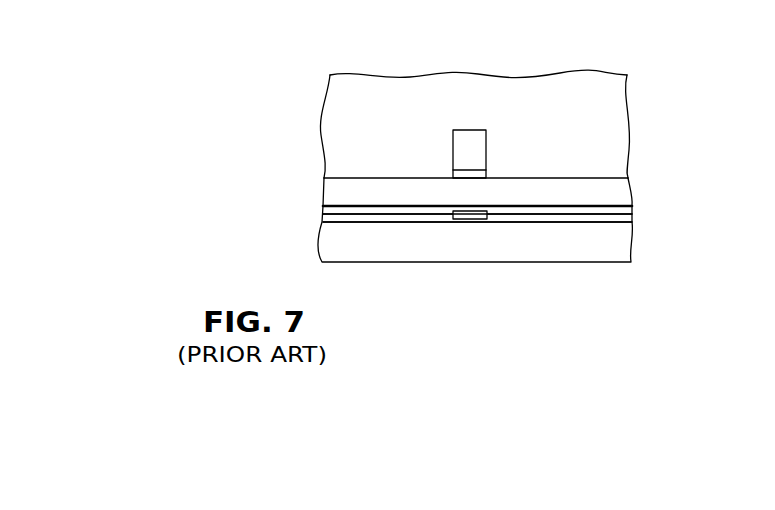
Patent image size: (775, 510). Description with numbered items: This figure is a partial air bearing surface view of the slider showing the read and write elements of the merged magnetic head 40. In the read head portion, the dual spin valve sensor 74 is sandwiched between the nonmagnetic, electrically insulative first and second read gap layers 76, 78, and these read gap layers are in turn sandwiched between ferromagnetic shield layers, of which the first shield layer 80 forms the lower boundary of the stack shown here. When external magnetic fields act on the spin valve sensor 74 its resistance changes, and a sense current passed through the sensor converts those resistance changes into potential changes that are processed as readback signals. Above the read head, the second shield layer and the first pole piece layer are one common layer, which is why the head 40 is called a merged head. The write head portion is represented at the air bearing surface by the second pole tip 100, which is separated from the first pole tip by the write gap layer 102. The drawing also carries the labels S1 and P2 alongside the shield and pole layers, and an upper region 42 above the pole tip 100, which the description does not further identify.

The merged magnetic head 40 is at (463, 176).
The upper dielectric layer 42 is at (333, 103).
The first shield layer 80 is at (512, 266).
The dual spin valve sensor 74 is at (468, 219).
The first read gap layer 76 is at (384, 222).
The second read gap layer 78 is at (591, 210).
The second pole tip 100 is at (465, 101).
The write gap layer 102 is at (470, 172).
The second plug P2 is at (477, 152).
The first silicide layer S1 is at (545, 242).